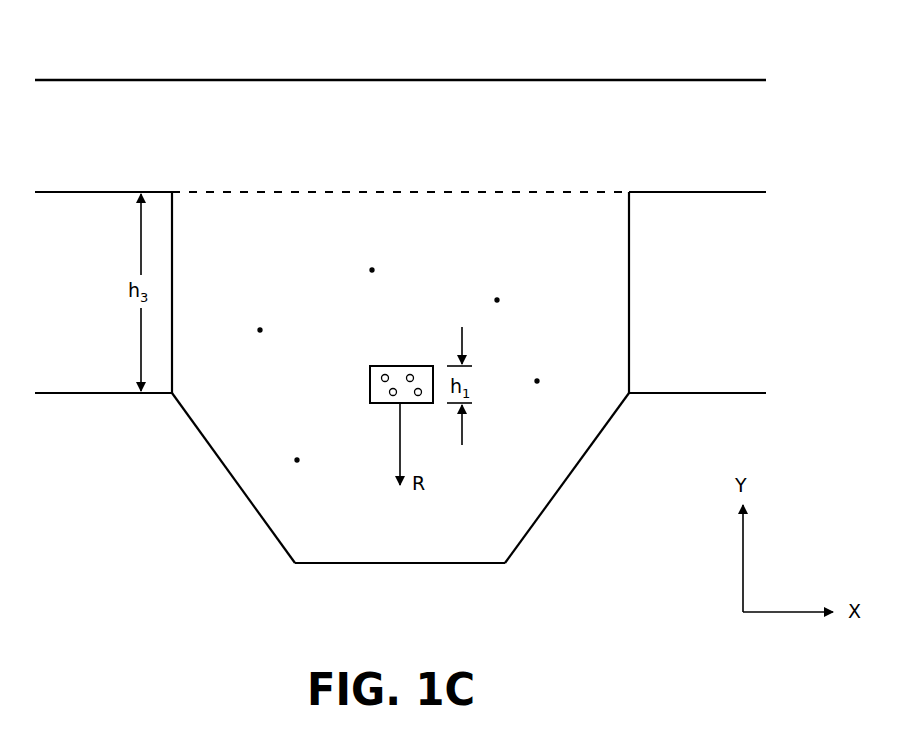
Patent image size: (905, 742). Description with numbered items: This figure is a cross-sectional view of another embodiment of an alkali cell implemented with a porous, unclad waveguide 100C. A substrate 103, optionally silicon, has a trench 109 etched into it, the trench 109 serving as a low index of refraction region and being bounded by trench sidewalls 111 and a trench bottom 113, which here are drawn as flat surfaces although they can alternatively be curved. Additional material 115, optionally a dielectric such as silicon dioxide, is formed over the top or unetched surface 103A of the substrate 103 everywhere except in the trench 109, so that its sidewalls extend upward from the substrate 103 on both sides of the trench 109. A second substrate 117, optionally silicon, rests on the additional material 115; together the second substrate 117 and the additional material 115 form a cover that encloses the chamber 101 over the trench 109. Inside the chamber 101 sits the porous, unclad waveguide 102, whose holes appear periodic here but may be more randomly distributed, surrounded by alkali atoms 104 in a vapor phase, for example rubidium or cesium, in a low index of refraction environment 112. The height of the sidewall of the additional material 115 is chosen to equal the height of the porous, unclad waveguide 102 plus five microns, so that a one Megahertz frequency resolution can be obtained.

The alkali cell implemented with a porous, unclad waveguide 100C is at (426, 43).
The second substrate 117 is at (416, 160).
The low index of refraction environment 112 is at (600, 242).
The additional material 115 is at (91, 307).
The chamber 101 is at (267, 306).
The substrate 103 is at (410, 498).
The top surface of the substrate 103A is at (40, 395).
The trench sidewalls 111 is at (243, 498).
The trench 109 is at (400, 559).
The trench bottom 113 is at (402, 563).
The porous, unclad waveguide 102 is at (390, 366).
The alkali atoms 104 is at (372, 270).